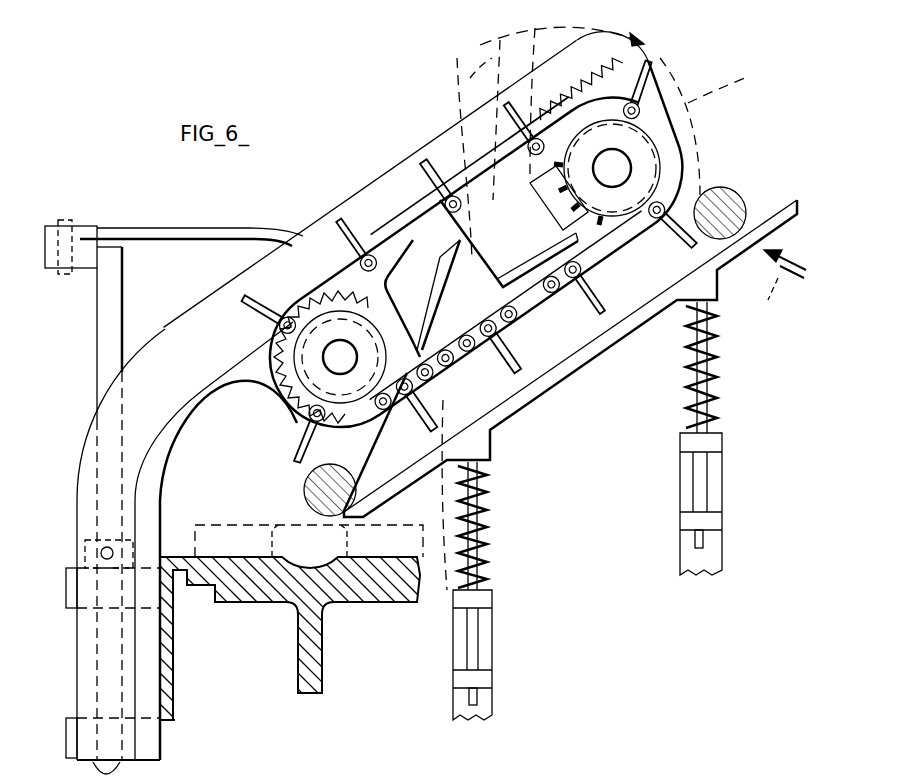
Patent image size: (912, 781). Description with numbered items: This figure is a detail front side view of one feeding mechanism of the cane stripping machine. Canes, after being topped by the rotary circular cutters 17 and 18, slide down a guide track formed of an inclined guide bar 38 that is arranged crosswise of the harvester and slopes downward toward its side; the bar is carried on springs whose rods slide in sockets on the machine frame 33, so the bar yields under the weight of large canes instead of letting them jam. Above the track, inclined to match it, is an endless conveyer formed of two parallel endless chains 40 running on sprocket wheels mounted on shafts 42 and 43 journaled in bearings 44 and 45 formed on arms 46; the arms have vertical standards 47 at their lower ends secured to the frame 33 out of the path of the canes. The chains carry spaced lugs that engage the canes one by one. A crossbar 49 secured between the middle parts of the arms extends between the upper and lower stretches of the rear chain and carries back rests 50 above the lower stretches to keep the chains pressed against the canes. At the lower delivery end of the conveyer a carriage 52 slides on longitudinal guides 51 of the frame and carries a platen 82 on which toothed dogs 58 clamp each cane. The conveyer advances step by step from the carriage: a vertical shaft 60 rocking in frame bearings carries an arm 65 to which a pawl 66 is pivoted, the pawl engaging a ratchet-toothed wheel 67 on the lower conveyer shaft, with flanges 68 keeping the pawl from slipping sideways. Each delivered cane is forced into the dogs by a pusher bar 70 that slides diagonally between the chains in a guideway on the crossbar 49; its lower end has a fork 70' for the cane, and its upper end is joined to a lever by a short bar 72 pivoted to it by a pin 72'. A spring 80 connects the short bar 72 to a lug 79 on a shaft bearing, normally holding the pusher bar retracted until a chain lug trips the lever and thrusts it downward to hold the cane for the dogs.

The rotary circular cutter 17 is at (702, 126).
The rotary circular cutter 18 is at (785, 279).
The machine frame 33 is at (175, 720).
The guide bar 38 is at (570, 358).
The endless chain 40 is at (463, 357).
The shaft 42 is at (614, 166).
The shaft 43 is at (339, 355).
The bearing 44 is at (292, 420).
The bearing 45 is at (688, 149).
The arm 46 is at (211, 327).
The vertical standard 47 is at (165, 682).
The crossbar 49 is at (480, 272).
The back rest 50 is at (514, 274).
The longitudinal guide 51 is at (178, 585).
The carriage 52 is at (318, 682).
The toothed dog 58 is at (309, 541).
The vertical shaft 60 is at (108, 326).
The arm 65 is at (81, 268).
The pawl 66 is at (154, 230).
The ratchet-toothed wheel 67 is at (390, 168).
The flange 68 is at (322, 250).
The pusher bar 70 is at (381, 376).
The fork 70' is at (377, 460).
The short bar 72 is at (506, 103).
The pin 72' is at (466, 314).
The lug 79 is at (577, 34).
The spring 80 is at (579, 82).
The platen 82 is at (272, 589).